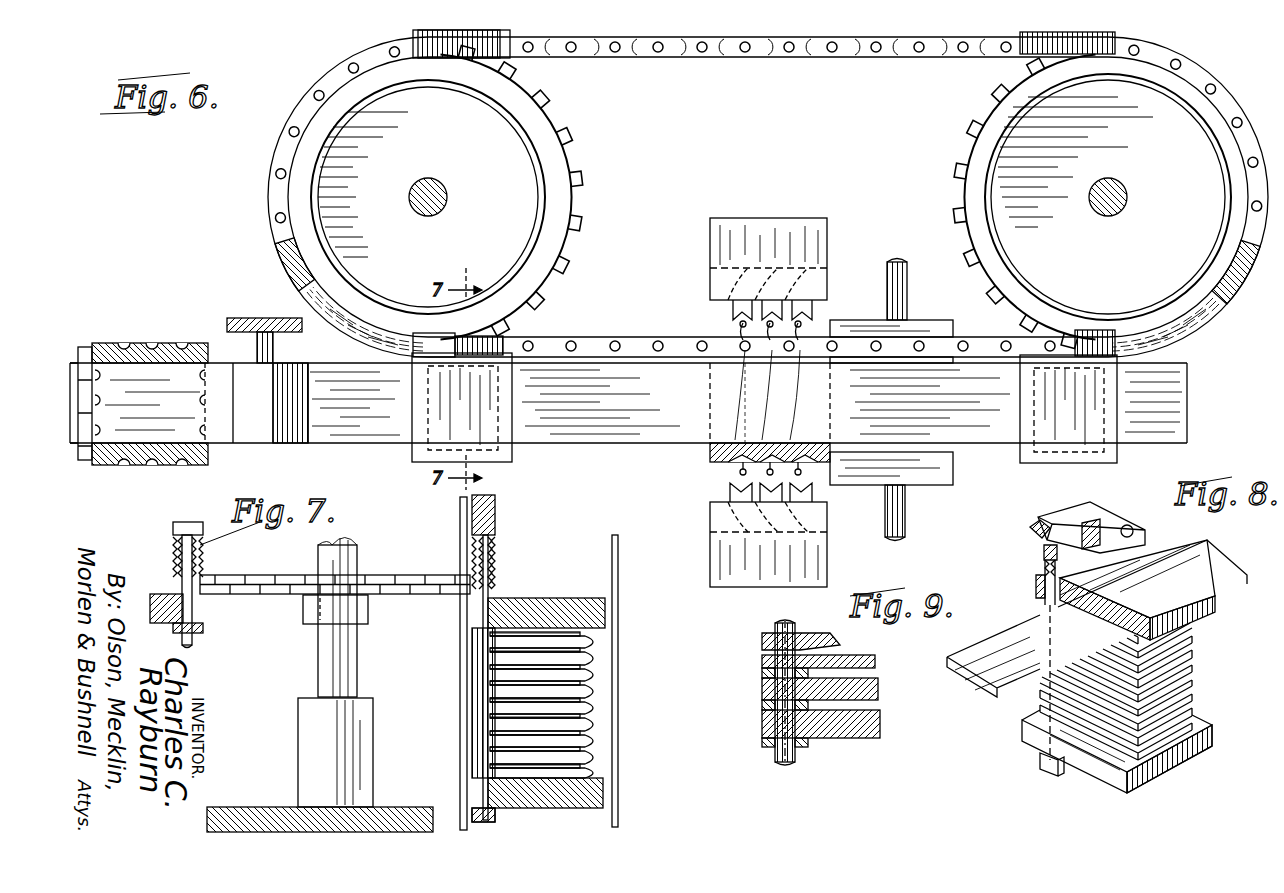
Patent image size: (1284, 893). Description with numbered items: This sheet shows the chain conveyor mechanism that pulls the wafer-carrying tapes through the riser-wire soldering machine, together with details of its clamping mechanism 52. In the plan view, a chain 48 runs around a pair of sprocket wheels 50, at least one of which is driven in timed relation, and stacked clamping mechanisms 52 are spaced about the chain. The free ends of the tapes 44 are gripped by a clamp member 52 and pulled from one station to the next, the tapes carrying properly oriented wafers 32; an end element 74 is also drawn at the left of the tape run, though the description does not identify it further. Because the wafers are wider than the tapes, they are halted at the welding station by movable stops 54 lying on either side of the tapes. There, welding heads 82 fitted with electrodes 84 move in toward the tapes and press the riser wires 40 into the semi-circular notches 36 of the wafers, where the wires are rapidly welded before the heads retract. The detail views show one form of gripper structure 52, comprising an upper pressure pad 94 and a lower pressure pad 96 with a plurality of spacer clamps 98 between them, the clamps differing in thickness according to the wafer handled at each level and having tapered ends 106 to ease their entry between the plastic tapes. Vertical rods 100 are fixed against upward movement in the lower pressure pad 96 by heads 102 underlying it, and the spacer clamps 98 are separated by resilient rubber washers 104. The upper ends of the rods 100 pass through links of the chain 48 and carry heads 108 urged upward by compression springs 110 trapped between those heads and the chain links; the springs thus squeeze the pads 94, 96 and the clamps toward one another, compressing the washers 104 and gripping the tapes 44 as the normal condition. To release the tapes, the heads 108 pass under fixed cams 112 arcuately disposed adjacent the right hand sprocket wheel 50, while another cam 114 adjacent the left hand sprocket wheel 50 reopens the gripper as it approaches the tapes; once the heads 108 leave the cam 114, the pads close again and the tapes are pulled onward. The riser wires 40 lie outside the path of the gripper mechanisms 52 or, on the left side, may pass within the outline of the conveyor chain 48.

In FIG. 6, the wafers 32 is at (142, 345).
In FIG. 6, the notches 36 is at (735, 340).
In FIG. 6, the riser wires 40 is at (780, 350).
In FIG. 7, the riser wires 40 is at (620, 576).
In FIG. 6, the tapes 44 is at (626, 440).
In FIG. 7, the tapes 44 is at (166, 608).
In FIG. 8, the tapes 44 is at (1225, 565).
In FIG. 6, the chain 48 is at (568, 340).
In FIG. 7, the chain 48 is at (432, 594).
In FIG. 8, the chain 48 is at (1120, 524).
In FIG. 6, the sprocket wheels 50 is at (555, 160).
In FIG. 6, the clamping mechanism 52 is at (516, 455).
In FIG. 7, the clamping mechanism 52 is at (213, 622).
In FIG. 9, the clamping mechanism 52 is at (752, 738).
In FIG. 8, the clamping mechanism 52 is at (1218, 736).
In FIG. 6, the movable stops 54 is at (930, 325).
In FIG. 6, the end plate 74 is at (84, 462).
In FIG. 6, the welding heads 82 is at (795, 220).
In FIG. 6, the electrodes 84 is at (805, 310).
In FIG. 7, the upper pressure pad 94 is at (570, 600).
In FIG. 8, the upper pressure pad 94 is at (1170, 585).
In FIG. 7, the lower pressure pad 96 is at (600, 788).
In FIG. 8, the lower pressure pad 96 is at (1175, 758).
In FIG. 7, the spacer clamps 98 is at (598, 712).
In FIG. 9, the spacer clamps 98 is at (880, 720).
In FIG. 8, the spacer clamps 98 is at (1195, 704).
In FIG. 7, the vertical rods 100 is at (470, 650).
In FIG. 9, the vertical rods 100 is at (786, 765).
In FIG. 8, the vertical rods 100 is at (1036, 590).
In FIG. 7, the heads 102 is at (497, 824).
In FIG. 8, the heads 102 is at (1050, 778).
In FIG. 7, the rubber washers 104 is at (206, 628).
In FIG. 9, the rubber washers 104 is at (760, 740).
In FIG. 7, the tapered ends 106 is at (598, 738).
In FIG. 7, the heads 108 is at (188, 522).
In FIG. 8, the heads 108 is at (1036, 522).
In FIG. 7, the compression springs 110 is at (203, 532).
In FIG. 8, the compression springs 110 is at (1100, 518).
In FIG. 6, the fixed cams 112 is at (1222, 283).
In FIG. 6, the cam 114 is at (282, 242).
In FIG. 7, the cam 114 is at (458, 500).